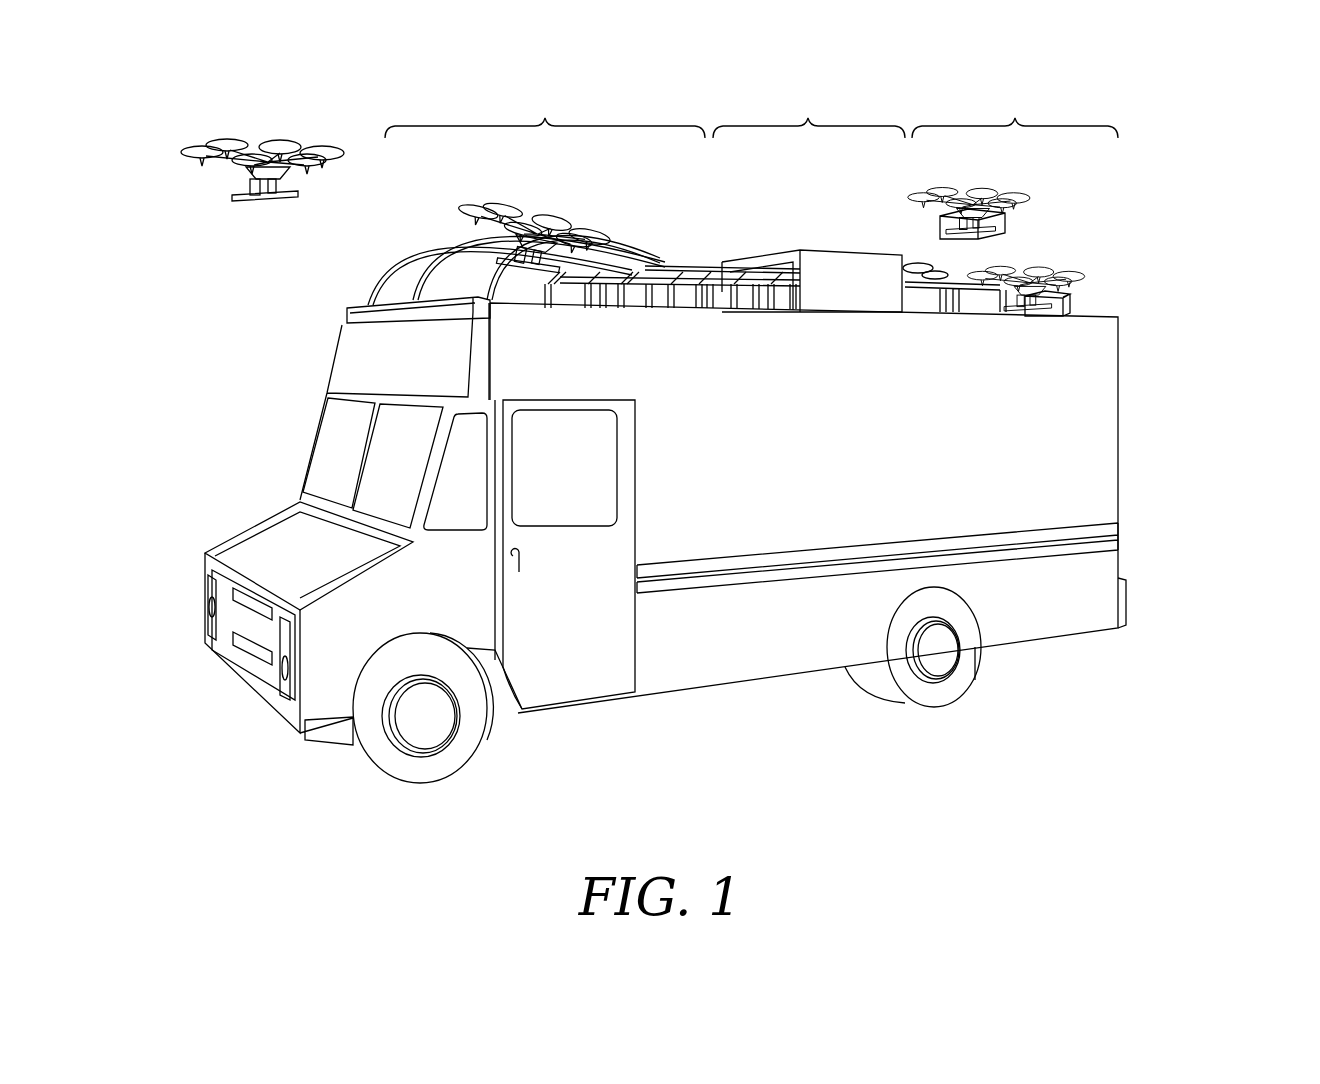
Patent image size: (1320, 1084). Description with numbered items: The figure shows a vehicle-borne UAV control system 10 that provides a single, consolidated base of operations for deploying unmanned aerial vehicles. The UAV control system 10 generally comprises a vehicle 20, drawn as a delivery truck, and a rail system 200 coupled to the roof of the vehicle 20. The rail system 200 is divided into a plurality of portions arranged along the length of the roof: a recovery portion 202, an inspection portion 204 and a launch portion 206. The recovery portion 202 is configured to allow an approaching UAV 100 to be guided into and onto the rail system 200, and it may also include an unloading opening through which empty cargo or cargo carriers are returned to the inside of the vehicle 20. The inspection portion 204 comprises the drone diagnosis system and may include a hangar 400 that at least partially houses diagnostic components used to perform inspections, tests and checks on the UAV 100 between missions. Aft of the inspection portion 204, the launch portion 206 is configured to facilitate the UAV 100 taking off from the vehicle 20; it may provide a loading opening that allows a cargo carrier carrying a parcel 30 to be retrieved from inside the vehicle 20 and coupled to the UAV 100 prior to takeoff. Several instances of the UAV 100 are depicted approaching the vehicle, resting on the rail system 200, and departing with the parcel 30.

The UAV control system 10 is at (1232, 152).
The vehicle 20 is at (318, 372).
The parcel 30 is at (933, 223).
The UAV 100 is at (195, 140).
The rail system 200 is at (687, 257).
The recovery portion 202 is at (545, 112).
The inspection portion 204 is at (809, 112).
The launch portion 206 is at (1015, 112).
The hangar 400 is at (833, 250).